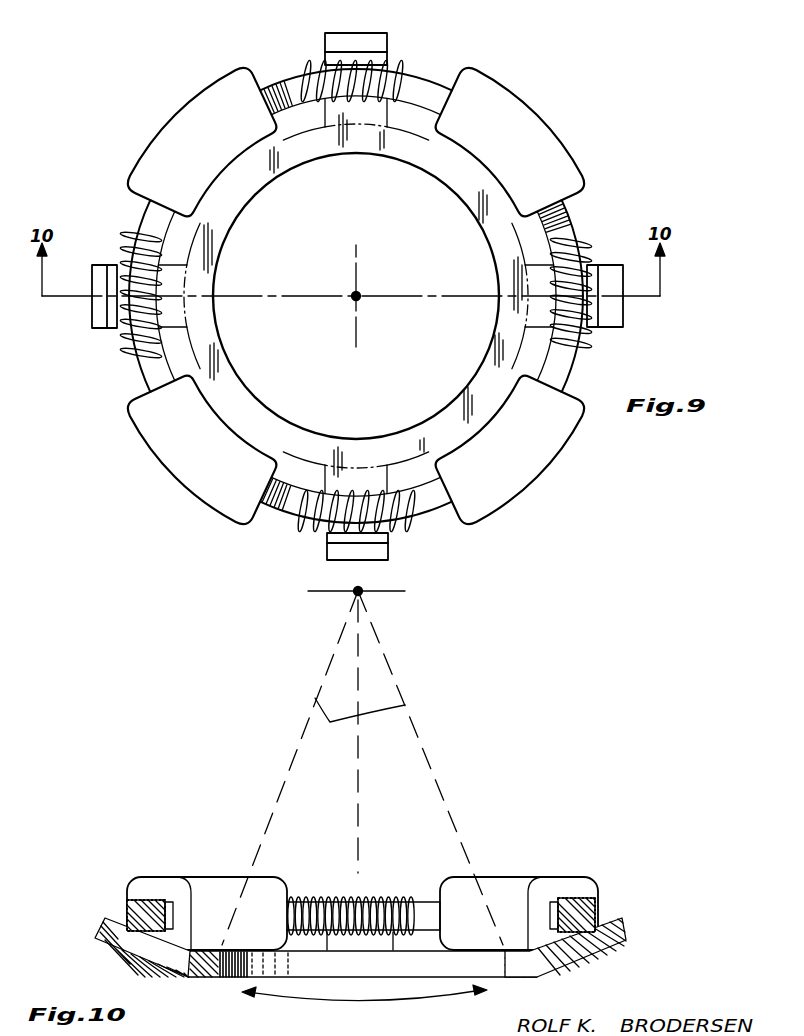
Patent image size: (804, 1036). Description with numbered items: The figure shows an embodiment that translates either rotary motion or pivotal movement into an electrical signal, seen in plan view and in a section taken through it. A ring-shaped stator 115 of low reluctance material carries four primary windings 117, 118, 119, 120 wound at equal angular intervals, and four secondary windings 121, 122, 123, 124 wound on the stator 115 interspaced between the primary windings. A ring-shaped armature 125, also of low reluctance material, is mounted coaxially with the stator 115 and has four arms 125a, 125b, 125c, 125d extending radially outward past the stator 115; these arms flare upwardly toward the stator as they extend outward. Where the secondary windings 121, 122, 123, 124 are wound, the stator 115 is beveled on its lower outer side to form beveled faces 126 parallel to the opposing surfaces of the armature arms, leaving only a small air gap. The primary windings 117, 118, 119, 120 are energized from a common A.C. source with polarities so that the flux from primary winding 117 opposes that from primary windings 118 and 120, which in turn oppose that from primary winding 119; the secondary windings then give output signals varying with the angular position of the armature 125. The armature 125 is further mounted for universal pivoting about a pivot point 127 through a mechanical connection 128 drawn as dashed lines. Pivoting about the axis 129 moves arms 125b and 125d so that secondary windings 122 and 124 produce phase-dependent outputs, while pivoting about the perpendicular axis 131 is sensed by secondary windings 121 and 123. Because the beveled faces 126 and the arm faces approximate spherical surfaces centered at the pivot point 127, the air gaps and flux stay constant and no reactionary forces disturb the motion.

In FIG. 9, the ring-shaped stator 115 is at (568, 228).
In FIG. 10, the ring-shaped stator 115 is at (578, 900).
In FIG. 9, the primary winding 117 is at (176, 472).
In FIG. 9, the primary winding 118 is at (207, 96).
In FIG. 10, the primary winding 118 is at (207, 875).
In FIG. 9, the primary winding 119 is at (523, 112).
In FIG. 10, the primary winding 119 is at (522, 875).
In FIG. 9, the primary winding 120 is at (549, 467).
In FIG. 9, the secondary winding 121 is at (318, 532).
In FIG. 9, the secondary winding 122 is at (128, 240).
In FIG. 9, the secondary winding 123 is at (394, 68).
In FIG. 10, the secondary winding 123 is at (391, 898).
In FIG. 9, the secondary winding 124 is at (586, 334).
In FIG. 10, the ring-shaped armature 125 is at (302, 973).
In FIG. 9, the armature arm 125a is at (389, 551).
In FIG. 9, the armature arm 125b is at (108, 330).
In FIG. 10, the armature arm 125b is at (115, 945).
In FIG. 9, the armature arm 125c is at (355, 36).
In FIG. 10, the armature arm 125c is at (377, 946).
In FIG. 9, the armature arm 125d is at (620, 312).
In FIG. 10, the armature arm 125d is at (628, 941).
In FIG. 10, the beveled faces 126 is at (577, 932).
In FIG. 9, the pivot point 127 is at (363, 290).
In FIG. 10, the pivot point 127 is at (362, 588).
In FIG. 10, the mechanical connection 128 is at (358, 692).
In FIG. 9, the axis 129 is at (395, 298).
In FIG. 10, the axis 129 is at (390, 594).
In FIG. 9, the axis 131 is at (355, 323).